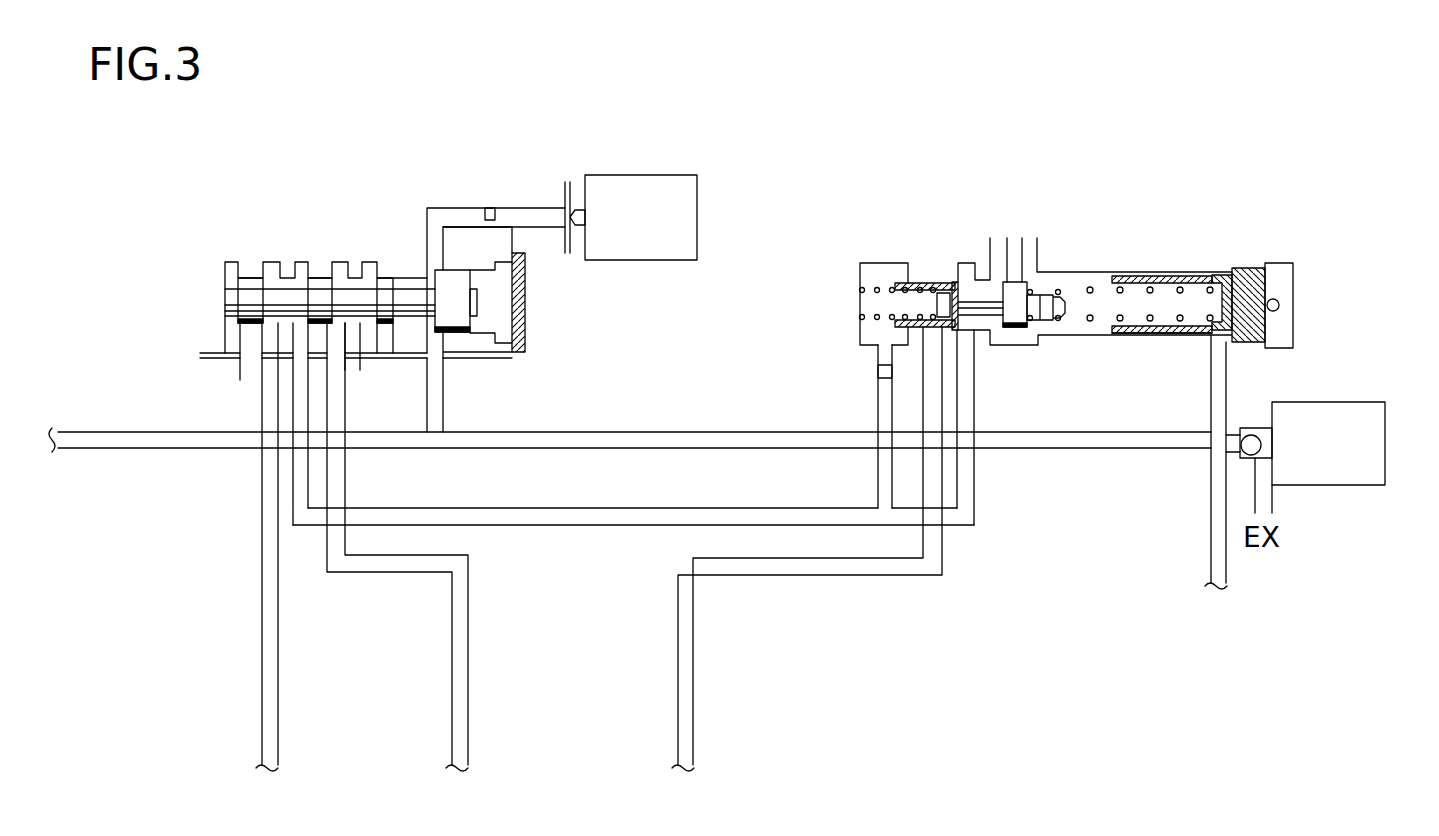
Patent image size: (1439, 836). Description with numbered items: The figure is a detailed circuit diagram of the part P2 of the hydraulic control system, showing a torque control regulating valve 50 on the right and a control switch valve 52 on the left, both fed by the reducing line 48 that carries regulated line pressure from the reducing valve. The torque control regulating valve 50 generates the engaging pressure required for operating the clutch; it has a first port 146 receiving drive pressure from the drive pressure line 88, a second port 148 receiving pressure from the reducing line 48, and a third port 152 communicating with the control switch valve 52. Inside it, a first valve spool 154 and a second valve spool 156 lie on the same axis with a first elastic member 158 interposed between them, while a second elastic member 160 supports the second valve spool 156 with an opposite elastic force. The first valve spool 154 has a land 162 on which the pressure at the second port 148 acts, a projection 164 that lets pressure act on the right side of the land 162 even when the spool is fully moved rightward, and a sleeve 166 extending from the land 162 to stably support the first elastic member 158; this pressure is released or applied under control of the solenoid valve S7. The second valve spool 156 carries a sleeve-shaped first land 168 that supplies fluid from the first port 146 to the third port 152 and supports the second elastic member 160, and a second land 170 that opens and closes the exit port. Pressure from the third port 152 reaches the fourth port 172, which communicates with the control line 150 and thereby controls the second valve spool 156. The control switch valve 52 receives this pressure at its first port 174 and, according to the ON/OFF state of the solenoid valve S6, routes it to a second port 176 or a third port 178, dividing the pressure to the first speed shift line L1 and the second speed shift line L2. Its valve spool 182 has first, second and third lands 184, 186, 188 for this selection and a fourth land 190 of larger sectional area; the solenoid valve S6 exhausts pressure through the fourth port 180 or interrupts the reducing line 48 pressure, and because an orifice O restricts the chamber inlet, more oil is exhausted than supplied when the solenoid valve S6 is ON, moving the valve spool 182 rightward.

The reducing line 48 is at (130, 450).
The torque control regulating valve 50 is at (1104, 364).
The control switch valve 52 is at (408, 298).
The drive pressure line 88 is at (812, 578).
The first port 146 is at (890, 348).
The second port 148 is at (1225, 348).
The control line 150 is at (575, 512).
The third port 152 is at (966, 345).
The first valve spool 154 is at (1166, 348).
The second valve spool 156 is at (965, 288).
The first elastic member 158 is at (1090, 287).
The second elastic member 160 is at (877, 290).
The land 162 is at (1215, 273).
The projection 164 is at (1278, 300).
The sleeve 166 is at (1155, 276).
The first land 168 is at (905, 283).
The second land 170 is at (1013, 330).
The fourth port 172 is at (878, 350).
The first port 174 is at (300, 327).
The second port 176 is at (268, 328).
The third port 178 is at (338, 330).
The fourth port 180 is at (433, 340).
The valve spool 182 is at (228, 300).
The first land 184 is at (320, 284).
The second land 186 is at (254, 284).
The third land 188 is at (386, 284).
The fourth land 190 is at (452, 268).
The orifice O is at (493, 220).
The part P2 is at (906, 86).
The solenoid valve S6 is at (641, 217).
The solenoid valve S7 is at (1328, 443).
The first speed shift line L1 is at (262, 680).
The second speed shift line L2 is at (452, 680).